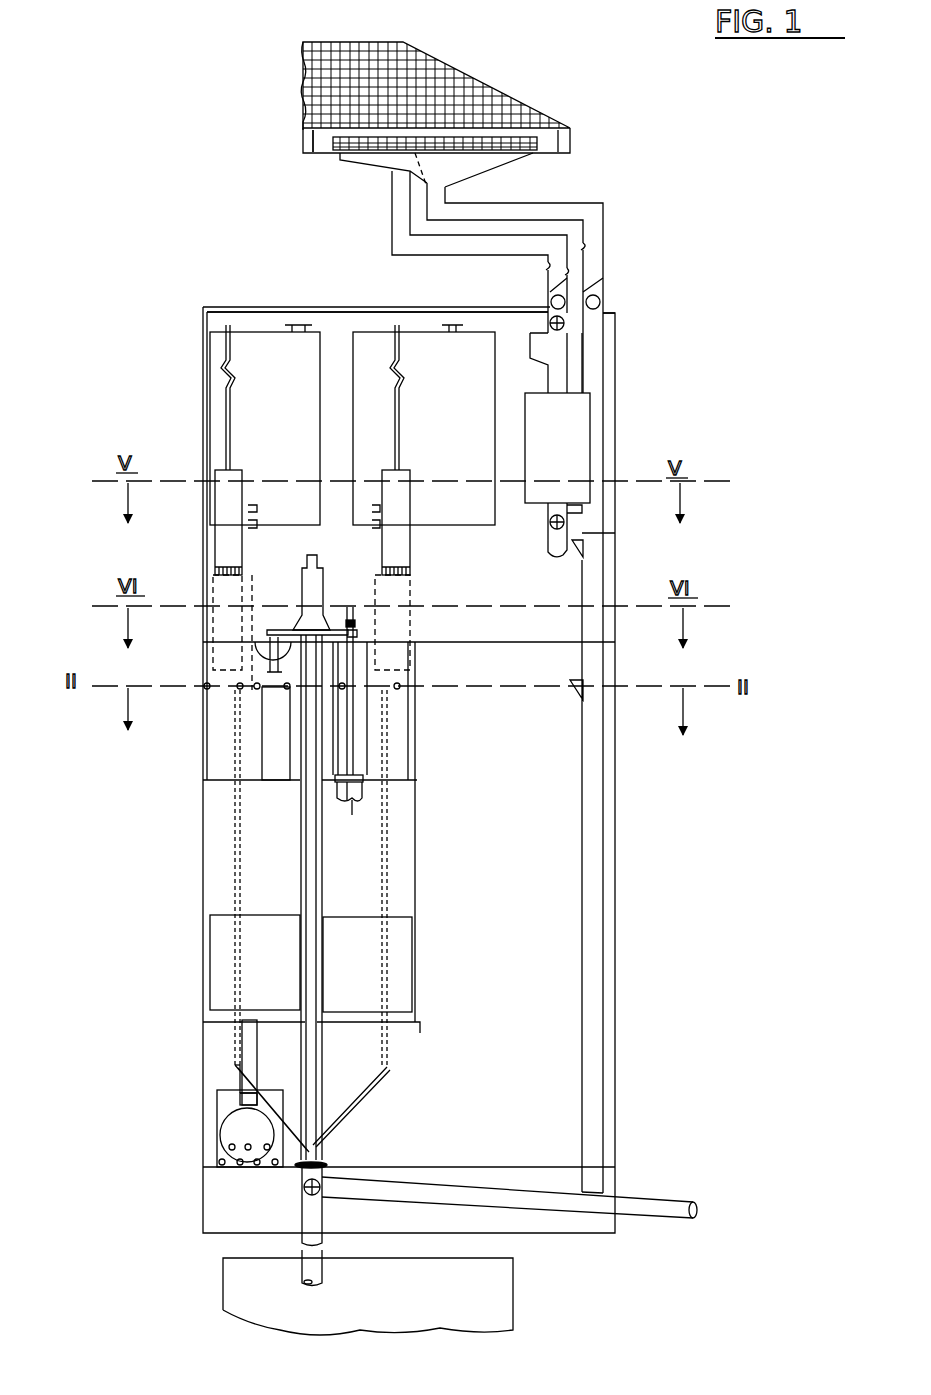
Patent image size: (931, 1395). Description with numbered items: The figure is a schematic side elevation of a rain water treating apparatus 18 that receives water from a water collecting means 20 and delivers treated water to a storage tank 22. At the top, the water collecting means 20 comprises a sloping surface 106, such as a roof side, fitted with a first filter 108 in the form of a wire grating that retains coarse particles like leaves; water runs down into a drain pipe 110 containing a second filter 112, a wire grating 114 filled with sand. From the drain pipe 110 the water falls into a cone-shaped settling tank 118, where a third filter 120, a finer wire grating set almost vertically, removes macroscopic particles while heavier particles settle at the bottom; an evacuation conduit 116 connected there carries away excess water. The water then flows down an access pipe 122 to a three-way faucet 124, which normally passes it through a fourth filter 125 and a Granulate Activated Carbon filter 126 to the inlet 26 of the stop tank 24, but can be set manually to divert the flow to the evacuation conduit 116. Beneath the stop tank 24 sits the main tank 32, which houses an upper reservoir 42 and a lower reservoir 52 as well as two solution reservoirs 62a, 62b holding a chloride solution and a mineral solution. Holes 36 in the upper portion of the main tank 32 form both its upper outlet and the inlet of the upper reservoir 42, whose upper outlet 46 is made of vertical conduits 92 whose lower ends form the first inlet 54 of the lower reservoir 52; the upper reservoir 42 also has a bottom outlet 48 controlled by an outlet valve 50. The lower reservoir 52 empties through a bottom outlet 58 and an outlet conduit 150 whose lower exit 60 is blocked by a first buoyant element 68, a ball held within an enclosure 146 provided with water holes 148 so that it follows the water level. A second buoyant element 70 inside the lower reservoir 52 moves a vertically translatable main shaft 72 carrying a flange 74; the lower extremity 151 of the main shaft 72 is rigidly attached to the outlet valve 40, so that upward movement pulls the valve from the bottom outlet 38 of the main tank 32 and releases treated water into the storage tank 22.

The apparatus 18 is at (140, 950).
The water collecting means 20 is at (522, 90).
The storage tank 22 is at (505, 1288).
The stop tank 24 is at (492, 633).
The inlet 26 is at (560, 548).
The main tank 32 is at (203, 870).
The holes 36 is at (415, 675).
The bottom outlet 38 is at (307, 1172).
The outlet valve 40 is at (332, 1152).
The upper reservoir 42 is at (215, 762).
The upper outlet 46 is at (427, 690).
The bottom outlet 48 is at (347, 800).
The outlet valve 50 is at (355, 773).
The lower reservoir 52 is at (293, 862).
The first inlet 54 is at (417, 797).
The bottom outlet 58 is at (250, 1032).
The lower exit 60 is at (243, 1112).
The solution reservoir 62a is at (305, 398).
The solution reservoir 62b is at (475, 418).
The first buoyant element 68 is at (223, 1133).
The second buoyant element 70 is at (403, 952).
The main shaft 72 is at (312, 850).
The flange 74 is at (345, 620).
The conduits 92 is at (417, 777).
The sloping surface 106 is at (533, 117).
The first filter 108 is at (306, 62).
The drain pipe 110 is at (560, 135).
The second filter 112 is at (338, 145).
The wire grating 114 is at (528, 148).
The evacuation conduit 116 is at (597, 822).
The settling tank 118 is at (460, 175).
The third filter 120 is at (412, 168).
The access pipe 122 is at (392, 248).
The three-way faucet 124 is at (553, 320).
The fourth filter 125 is at (585, 380).
The Granulate Activated Carbon filter 126 is at (560, 463).
The enclosure 146 is at (217, 1092).
The water holes 148 is at (218, 1188).
The outlet conduit 150 is at (235, 1068).
The lower extremity 151 is at (353, 1128).